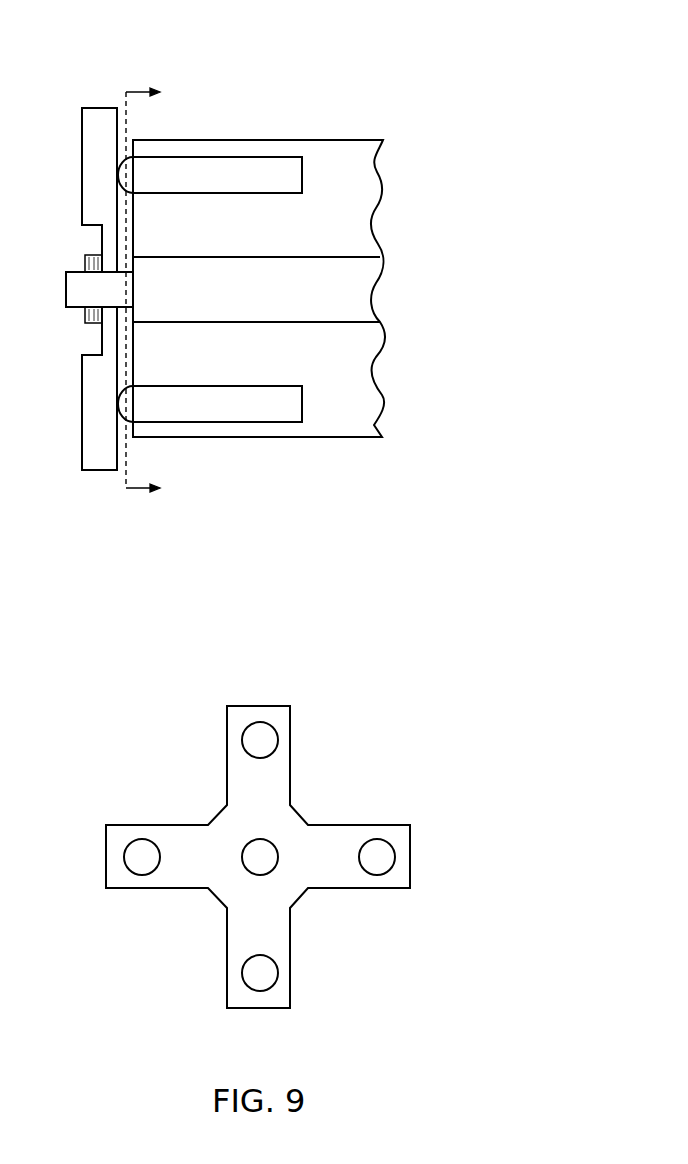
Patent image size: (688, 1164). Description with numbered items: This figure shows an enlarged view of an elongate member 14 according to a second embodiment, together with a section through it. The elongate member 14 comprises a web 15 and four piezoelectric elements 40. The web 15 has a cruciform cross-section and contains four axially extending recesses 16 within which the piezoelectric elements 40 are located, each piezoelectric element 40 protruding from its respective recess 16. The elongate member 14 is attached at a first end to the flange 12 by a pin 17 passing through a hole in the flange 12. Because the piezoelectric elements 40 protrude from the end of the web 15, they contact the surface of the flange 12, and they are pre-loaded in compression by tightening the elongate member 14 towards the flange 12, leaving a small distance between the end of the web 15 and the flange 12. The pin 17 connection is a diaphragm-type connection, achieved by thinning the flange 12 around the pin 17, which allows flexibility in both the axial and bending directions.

The flange 12 is at (90, 107).
The elongate member 14 is at (298, 530).
The web 15 is at (367, 140).
The axially extending recess 16 is at (235, 732).
The pin 17 is at (70, 307).
The piezoelectric element 40 is at (213, 157).